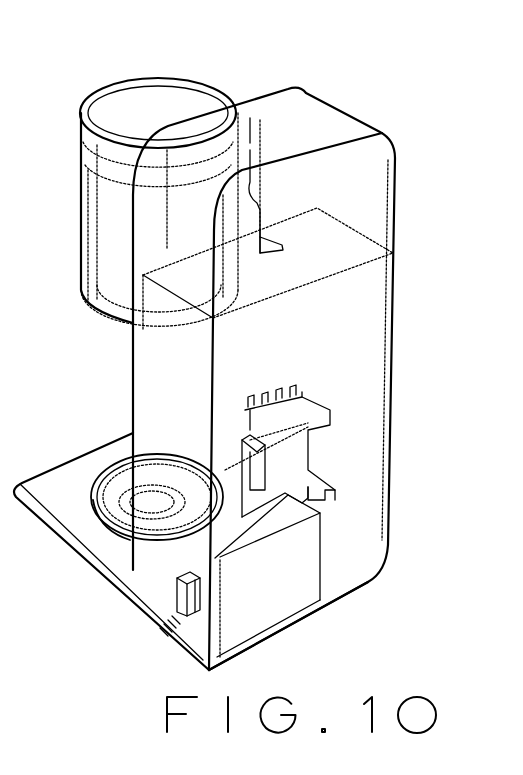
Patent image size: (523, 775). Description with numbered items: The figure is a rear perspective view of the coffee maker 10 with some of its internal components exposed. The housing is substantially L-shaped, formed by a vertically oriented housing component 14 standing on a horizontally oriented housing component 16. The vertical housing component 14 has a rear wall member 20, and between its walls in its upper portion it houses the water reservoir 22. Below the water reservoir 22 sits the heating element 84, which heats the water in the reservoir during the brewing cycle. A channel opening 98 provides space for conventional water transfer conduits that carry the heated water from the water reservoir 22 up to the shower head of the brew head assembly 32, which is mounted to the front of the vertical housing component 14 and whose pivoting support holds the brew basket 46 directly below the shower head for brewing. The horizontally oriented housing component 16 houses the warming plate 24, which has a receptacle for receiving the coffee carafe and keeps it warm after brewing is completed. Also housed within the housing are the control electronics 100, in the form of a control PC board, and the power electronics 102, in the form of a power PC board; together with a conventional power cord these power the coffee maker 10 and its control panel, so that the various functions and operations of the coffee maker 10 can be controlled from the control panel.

The coffee maker 10 is at (240, 74).
The vertically oriented housing component 14 is at (397, 225).
The horizontally oriented housing component 16 is at (67, 545).
The rear wall member 20 is at (357, 577).
The water reservoir 22 is at (327, 345).
The warming plate 24 is at (105, 465).
The brew head assembly 32 is at (60, 233).
The brew basket 46 is at (107, 202).
The heating element 84 is at (302, 405).
The channel opening 98 is at (262, 247).
The control electronics 100 is at (253, 145).
The power electronics 102 is at (163, 633).